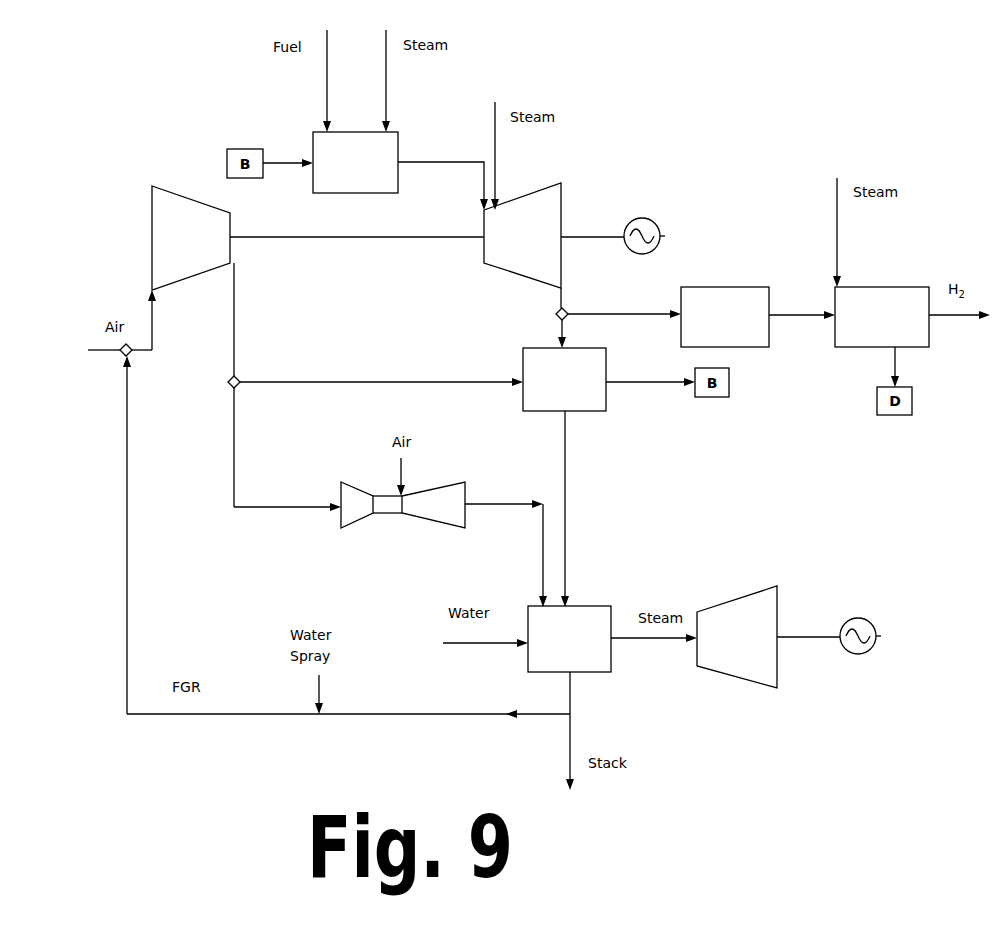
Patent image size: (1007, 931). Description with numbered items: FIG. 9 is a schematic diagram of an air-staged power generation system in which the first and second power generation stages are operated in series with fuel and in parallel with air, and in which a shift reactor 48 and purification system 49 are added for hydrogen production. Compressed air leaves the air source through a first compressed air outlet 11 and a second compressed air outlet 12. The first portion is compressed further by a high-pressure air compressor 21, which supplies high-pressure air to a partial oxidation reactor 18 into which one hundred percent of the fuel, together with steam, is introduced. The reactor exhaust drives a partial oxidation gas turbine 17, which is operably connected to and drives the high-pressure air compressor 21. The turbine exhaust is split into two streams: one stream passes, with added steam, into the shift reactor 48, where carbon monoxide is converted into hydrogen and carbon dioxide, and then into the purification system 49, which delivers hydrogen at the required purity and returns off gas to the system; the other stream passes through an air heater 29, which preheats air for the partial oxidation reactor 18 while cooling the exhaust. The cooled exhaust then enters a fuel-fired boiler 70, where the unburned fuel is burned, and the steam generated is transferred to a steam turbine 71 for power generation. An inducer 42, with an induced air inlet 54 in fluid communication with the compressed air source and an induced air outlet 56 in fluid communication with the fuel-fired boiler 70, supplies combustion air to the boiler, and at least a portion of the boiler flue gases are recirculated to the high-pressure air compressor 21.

The first compressed air outlet 11 is at (238, 378).
The second compressed air outlet 12 is at (239, 386).
The partial oxidation gas turbine 17 is at (565, 202).
The partial oxidation reactor 18 is at (398, 143).
The high-pressure air compressor 21 is at (168, 186).
The air heater 29 is at (607, 397).
The inducer 42 is at (388, 517).
The shift reactor 48 is at (713, 286).
The purification system 49 is at (890, 285).
The induced air inlet 54 is at (340, 500).
The induced air outlet 56 is at (465, 498).
The fuel-fired boiler 70 is at (613, 657).
The steam turbine 71 is at (778, 672).